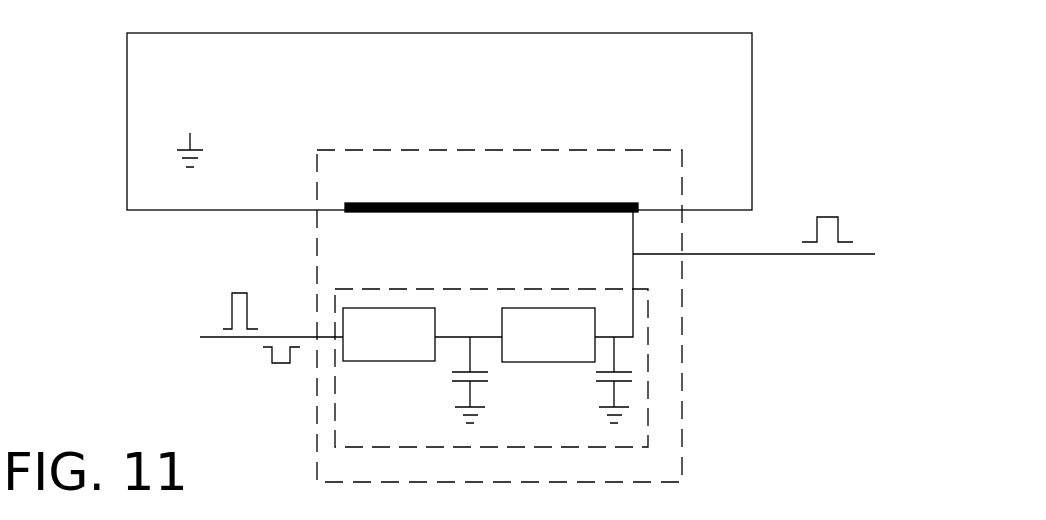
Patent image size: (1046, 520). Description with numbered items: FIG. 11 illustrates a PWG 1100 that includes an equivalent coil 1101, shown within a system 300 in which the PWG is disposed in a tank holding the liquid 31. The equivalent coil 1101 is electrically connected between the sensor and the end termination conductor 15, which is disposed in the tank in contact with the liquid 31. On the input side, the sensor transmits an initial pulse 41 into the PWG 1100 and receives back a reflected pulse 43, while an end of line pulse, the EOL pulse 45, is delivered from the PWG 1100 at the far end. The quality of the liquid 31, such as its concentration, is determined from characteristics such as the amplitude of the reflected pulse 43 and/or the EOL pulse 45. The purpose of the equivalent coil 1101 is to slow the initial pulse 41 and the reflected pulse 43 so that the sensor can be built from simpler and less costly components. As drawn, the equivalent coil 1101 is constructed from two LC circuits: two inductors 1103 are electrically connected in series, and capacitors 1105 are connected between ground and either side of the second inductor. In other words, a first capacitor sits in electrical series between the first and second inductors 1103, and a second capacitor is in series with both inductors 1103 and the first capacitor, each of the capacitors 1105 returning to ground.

The system 300 is at (31, 132).
The liquid 31 is at (297, 132).
The end termination conductor 15 is at (450, 200).
The PWG 1100 is at (355, 282).
The equivalent coil 1101 is at (650, 356).
The inductors 1103 is at (366, 346).
The capacitors 1105 is at (390, 391).
The initial pulse 41 is at (217, 311).
The reflected pulse 43 is at (255, 364).
The EOL pulse 45 is at (848, 222).